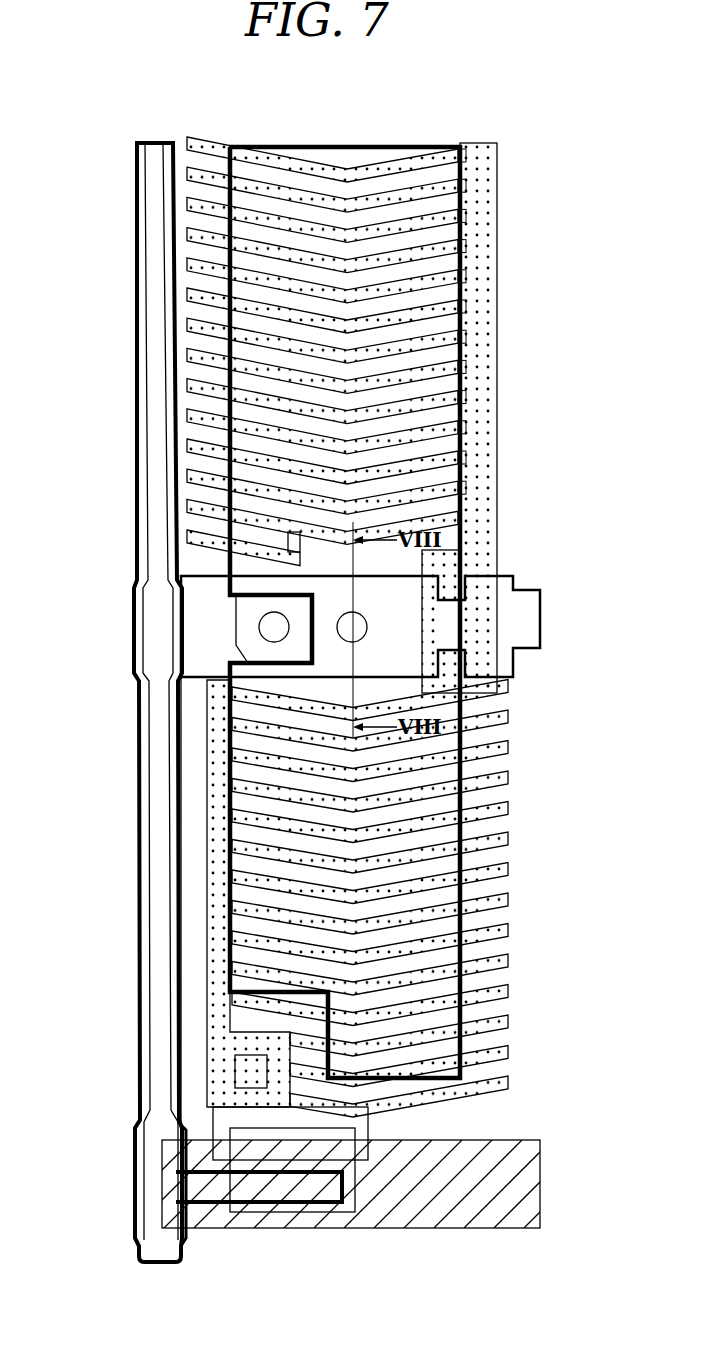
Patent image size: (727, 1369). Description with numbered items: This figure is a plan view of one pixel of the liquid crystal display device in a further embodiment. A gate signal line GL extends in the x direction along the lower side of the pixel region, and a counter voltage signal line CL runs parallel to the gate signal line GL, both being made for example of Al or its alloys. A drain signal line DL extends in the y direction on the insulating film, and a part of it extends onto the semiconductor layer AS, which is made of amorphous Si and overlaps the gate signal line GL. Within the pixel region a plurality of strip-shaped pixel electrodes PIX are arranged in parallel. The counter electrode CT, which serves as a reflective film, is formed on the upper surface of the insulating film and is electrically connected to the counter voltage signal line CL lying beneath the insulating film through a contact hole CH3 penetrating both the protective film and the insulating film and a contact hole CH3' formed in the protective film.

The counter electrode CT is at (356, 145).
The pixel electrodes PIX is at (190, 356).
The contact hole CH3 is at (164, 616).
The contact hole CH3' is at (203, 639).
The drain signal line DL is at (138, 796).
The counter voltage signal line CL is at (542, 622).
The gate signal line GL is at (545, 1158).
The semiconductor layer AS is at (345, 1212).